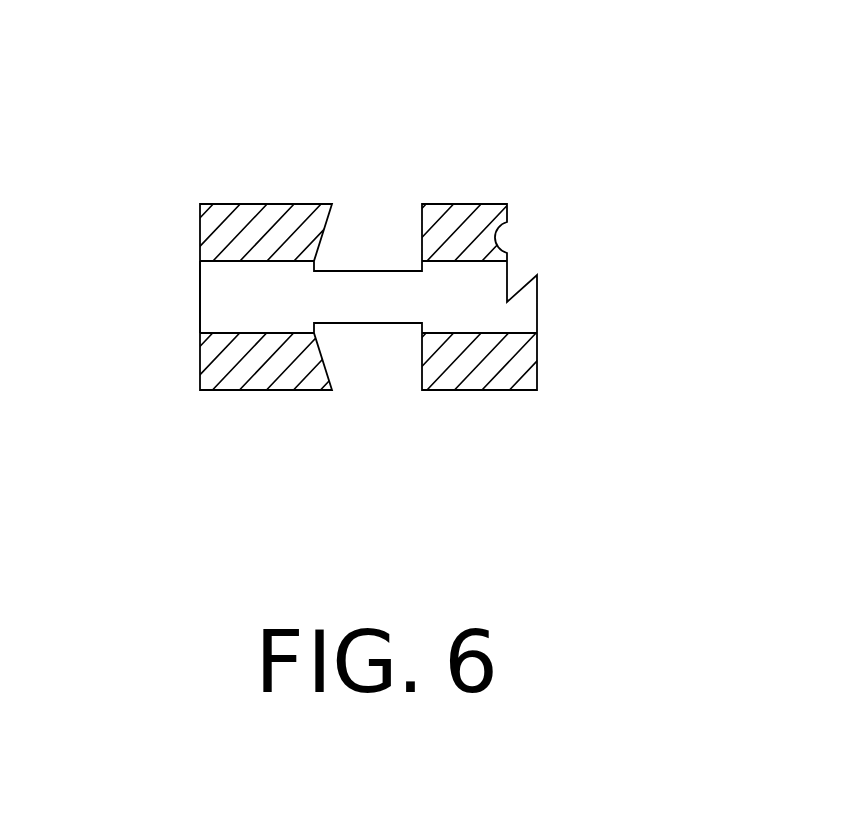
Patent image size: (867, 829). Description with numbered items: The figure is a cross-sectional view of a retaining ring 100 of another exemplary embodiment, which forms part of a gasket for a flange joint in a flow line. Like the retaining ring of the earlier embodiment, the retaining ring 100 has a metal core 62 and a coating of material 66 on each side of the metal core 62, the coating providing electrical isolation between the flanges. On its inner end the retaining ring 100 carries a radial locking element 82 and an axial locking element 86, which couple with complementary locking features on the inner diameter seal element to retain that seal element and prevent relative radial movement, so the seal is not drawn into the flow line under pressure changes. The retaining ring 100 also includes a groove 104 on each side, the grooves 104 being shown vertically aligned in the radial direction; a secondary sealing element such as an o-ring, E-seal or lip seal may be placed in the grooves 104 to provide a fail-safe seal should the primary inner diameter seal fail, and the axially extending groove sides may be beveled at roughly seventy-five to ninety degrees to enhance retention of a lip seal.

The retaining ring 100 is at (531, 153).
The coating of material 66 is at (200, 237).
The metal core 62 is at (200, 300).
The axial locking element 86 is at (497, 240).
The radial locking element 82 is at (528, 290).
The groove 104 is at (370, 253).